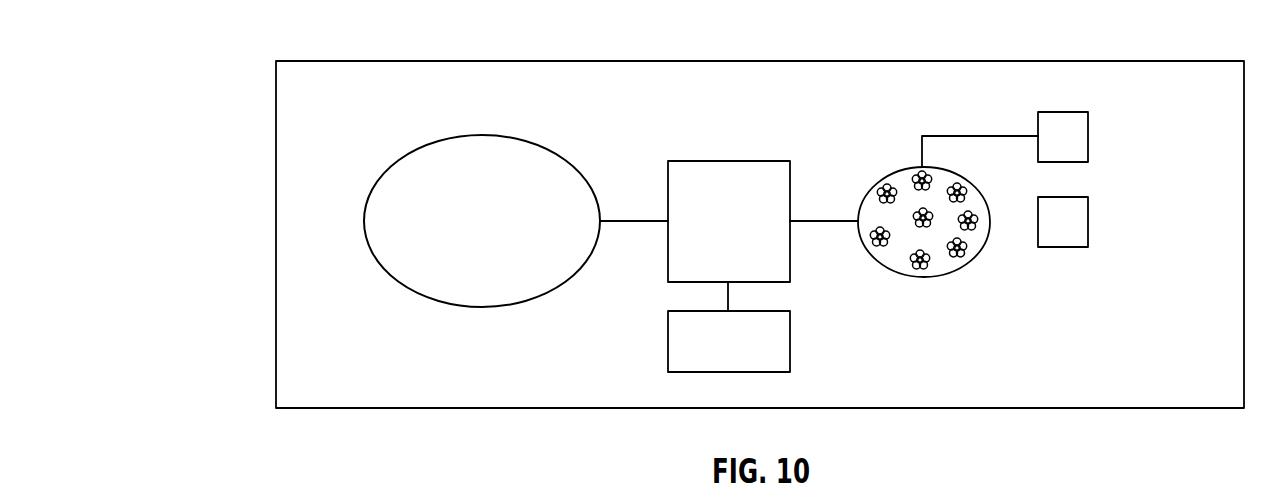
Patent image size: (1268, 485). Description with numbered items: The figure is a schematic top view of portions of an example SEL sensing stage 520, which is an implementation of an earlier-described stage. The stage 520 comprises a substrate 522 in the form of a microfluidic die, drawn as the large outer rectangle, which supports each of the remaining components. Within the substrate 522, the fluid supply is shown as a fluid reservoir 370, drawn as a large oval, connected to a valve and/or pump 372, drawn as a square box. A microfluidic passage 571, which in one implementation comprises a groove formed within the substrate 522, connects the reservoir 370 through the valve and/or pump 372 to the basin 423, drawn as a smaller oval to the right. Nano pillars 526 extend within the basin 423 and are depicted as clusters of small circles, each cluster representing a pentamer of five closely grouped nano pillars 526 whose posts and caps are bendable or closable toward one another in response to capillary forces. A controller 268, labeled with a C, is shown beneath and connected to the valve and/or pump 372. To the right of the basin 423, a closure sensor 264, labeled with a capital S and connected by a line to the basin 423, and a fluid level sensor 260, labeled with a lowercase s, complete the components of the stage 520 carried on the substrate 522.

The SEL sensing stage 520 is at (368, 32).
The substrate 522 is at (276, 233).
The fluid reservoir 370 is at (400, 158).
The valve and/or pump 372 is at (730, 160).
The controller 268 is at (790, 340).
The microfluidic passage 571 is at (810, 220).
The basin 423 is at (960, 266).
The nano pillars 526 is at (918, 175).
The closure sensor 264 is at (1088, 135).
The fluid level sensor 260 is at (1088, 222).